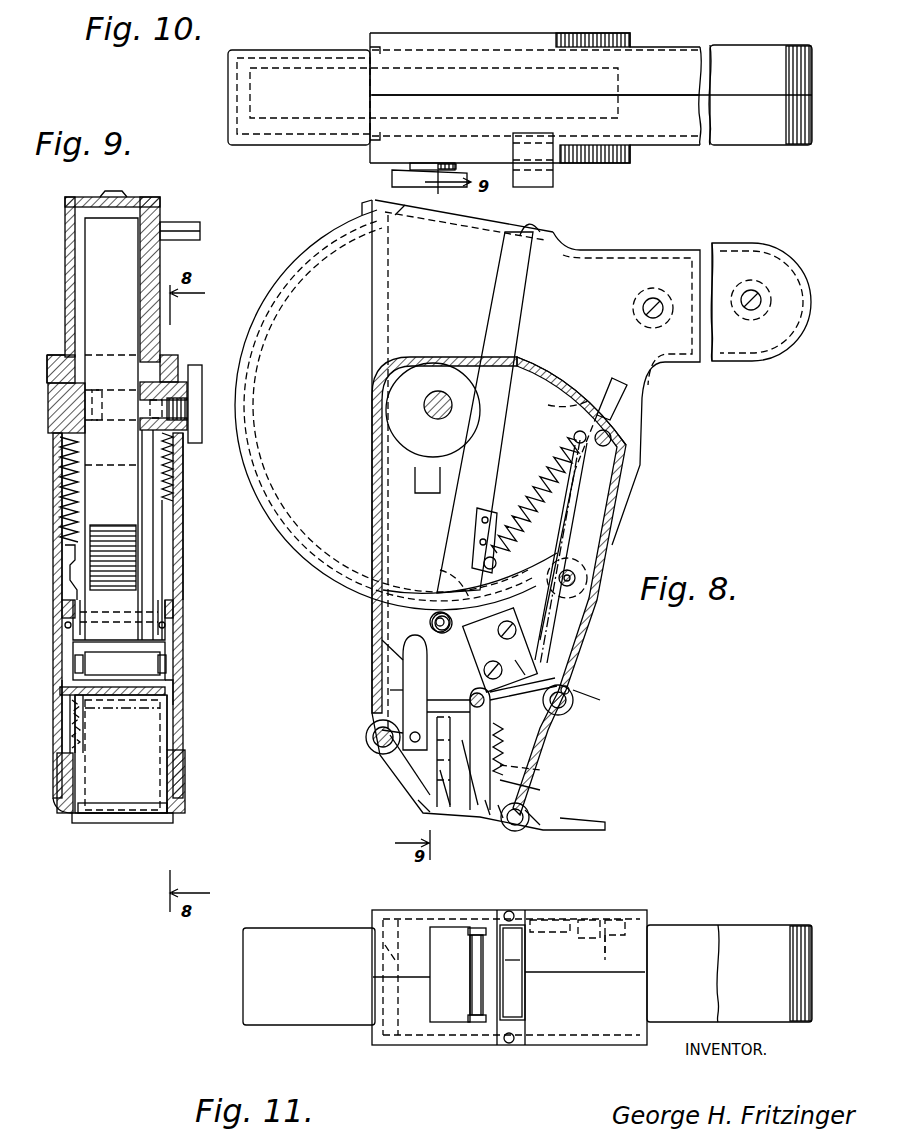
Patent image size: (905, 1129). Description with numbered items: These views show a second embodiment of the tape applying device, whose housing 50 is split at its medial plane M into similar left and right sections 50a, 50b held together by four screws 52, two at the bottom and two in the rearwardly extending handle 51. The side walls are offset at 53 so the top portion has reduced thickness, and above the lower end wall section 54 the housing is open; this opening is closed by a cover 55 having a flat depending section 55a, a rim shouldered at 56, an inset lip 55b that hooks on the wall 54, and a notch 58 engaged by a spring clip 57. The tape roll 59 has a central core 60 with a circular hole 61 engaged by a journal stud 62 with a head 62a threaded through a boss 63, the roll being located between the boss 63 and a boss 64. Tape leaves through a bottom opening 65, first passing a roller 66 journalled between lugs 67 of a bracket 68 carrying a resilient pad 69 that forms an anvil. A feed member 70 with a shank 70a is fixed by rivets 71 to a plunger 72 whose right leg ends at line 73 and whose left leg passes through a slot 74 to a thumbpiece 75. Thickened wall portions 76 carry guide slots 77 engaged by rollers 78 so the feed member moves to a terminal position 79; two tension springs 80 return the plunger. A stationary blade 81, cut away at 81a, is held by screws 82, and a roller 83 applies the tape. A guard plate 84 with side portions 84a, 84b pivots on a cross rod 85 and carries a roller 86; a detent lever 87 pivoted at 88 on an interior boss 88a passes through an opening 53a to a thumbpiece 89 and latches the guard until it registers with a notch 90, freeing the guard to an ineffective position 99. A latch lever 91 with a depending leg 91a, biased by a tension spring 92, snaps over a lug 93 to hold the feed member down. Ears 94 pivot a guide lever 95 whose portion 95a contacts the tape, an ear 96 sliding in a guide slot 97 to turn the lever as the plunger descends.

In FIG. 10, the housing 50 is at (637, 34).
In FIG. 9, the housing 50 is at (48, 440).
In FIG. 8, the housing 50 is at (645, 411).
In FIG. 10, the left housing section 50a is at (487, 113).
In FIG. 9, the left housing section 50a is at (183, 520).
In FIG. 10, the right housing section 50b is at (487, 78).
In FIG. 9, the right housing section 50b is at (56, 560).
In FIG. 10, the handle 51 is at (790, 130).
In FIG. 8, the handle 51 is at (740, 355).
In FIG. 11, the handle 51 is at (727, 925).
In FIG. 8, the screws 52 is at (751, 292).
In FIG. 11, the screws 52 is at (378, 958).
In FIG. 10, the offset 53 is at (375, 45).
In FIG. 9, the offset 53 is at (62, 354).
In FIG. 8, the offset 53 is at (545, 374).
In FIG. 8, the opening 53a is at (560, 403).
In FIG. 8, the lower end wall section 54 is at (430, 770).
In FIG. 10, the cover 55 is at (219, 81).
In FIG. 8, the cover 55 is at (303, 563).
In FIG. 11, the cover 55 is at (232, 1004).
In FIG. 8, the flat depending section 55a is at (400, 665).
In FIG. 8, the inset lip 55b is at (395, 730).
In FIG. 10, the shoulder 56 is at (368, 49).
In FIG. 8, the spring clip 57 is at (405, 215).
In FIG. 8, the notch 58 is at (362, 205).
In FIG. 10, the tape roll 59 is at (245, 100).
In FIG. 9, the tape roll 59 is at (140, 585).
In FIG. 8, the tape roll 59 is at (306, 272).
In FIG. 9, the central core 60 is at (90, 448).
In FIG. 8, the central core 60 is at (440, 475).
In FIG. 9, the circular hole 61 is at (48, 405).
In FIG. 8, the circular hole 61 is at (438, 444).
In FIG. 9, the journal stud 62 is at (160, 392).
In FIG. 8, the journal stud 62 is at (430, 395).
In FIG. 10, the head 62a is at (395, 178).
In FIG. 9, the head 62a is at (197, 444).
In FIG. 9, the boss 63 is at (162, 470).
In FIG. 9, the boss 64 is at (62, 385).
In FIG. 8, the bottom opening 65 is at (447, 806).
In FIG. 11, the bottom opening 65 is at (450, 1010).
In FIG. 9, the roller 66 is at (165, 602).
In FIG. 8, the roller 66 is at (558, 581).
In FIG. 9, the lugs 67 is at (85, 607).
In FIG. 8, the lugs 67 is at (512, 619).
In FIG. 8, the bracket 68 is at (570, 672).
In FIG. 8, the resilient pad 69 is at (572, 688).
In FIG. 9, the feed member 70 is at (119, 661).
In FIG. 8, the shank 70a is at (455, 590).
In FIG. 8, the rivets 71 is at (445, 634).
In FIG. 9, the plunger 72 is at (160, 595).
In FIG. 8, the plunger 72 is at (510, 480).
In FIG. 8, the line 73 is at (455, 565).
In FIG. 10, the slot 74 is at (560, 135).
In FIG. 9, the slot 74 is at (125, 195).
In FIG. 8, the slot 74 is at (540, 330).
In FIG. 10, the thumbpiece 75 is at (546, 178).
In FIG. 9, the thumbpiece 75 is at (185, 226).
In FIG. 8, the thumbpiece 75 is at (560, 233).
In FIG. 9, the portions of increased thickness 76 is at (60, 770).
In FIG. 8, the portions of increased thickness 76 is at (405, 655).
In FIG. 11, the portions of increased thickness 76 is at (418, 910).
In FIG. 9, the guide slots 77 is at (165, 676).
In FIG. 8, the guide slots 77 is at (390, 672).
In FIG. 9, the rollers 78 is at (62, 626).
In FIG. 8, the rollers 78 is at (435, 612).
In FIG. 8, the terminal position 79 is at (420, 800).
In FIG. 9, the tension springs 80 is at (60, 540).
In FIG. 8, the tension springs 80 is at (512, 522).
In FIG. 8, the stationary blade 81 is at (532, 826).
In FIG. 11, the stationary blade 81 is at (510, 1022).
In FIG. 11, the cut-away 81a is at (527, 972).
In FIG. 11, the screws 82 is at (512, 912).
In FIG. 9, the roller 83 is at (88, 826).
In FIG. 8, the roller 83 is at (530, 826).
In FIG. 11, the roller 83 is at (520, 1005).
In FIG. 9, the guard plate 84 is at (150, 785).
In FIG. 8, the guard plate 84 is at (472, 812).
In FIG. 11, the guard plate 84 is at (488, 1025).
In FIG. 8, the left side portion 84a is at (540, 790).
In FIG. 11, the left side portion 84a is at (480, 926).
In FIG. 8, the right side portion 84b is at (545, 770).
In FIG. 11, the right side portion 84b is at (477, 1018).
In FIG. 8, the cross rod 85 is at (585, 700).
In FIG. 9, the roller 86 is at (120, 826).
In FIG. 8, the roller 86 is at (490, 826).
In FIG. 8, the detent lever 87 is at (590, 540).
In FIG. 11, the detent lever 87 is at (614, 957).
In FIG. 8, the pivot 88 is at (577, 578).
In FIG. 11, the pivot 88 is at (590, 920).
In FIG. 11, the interior boss 88a is at (605, 920).
In FIG. 8, the thumbpiece 89 is at (618, 380).
In FIG. 11, the thumbpiece 89 is at (625, 925).
In FIG. 8, the notch 90 is at (540, 740).
In FIG. 9, the latch lever 91 is at (70, 742).
In FIG. 8, the depending leg 91a is at (520, 755).
In FIG. 9, the tension spring 92 is at (85, 762).
In FIG. 8, the tension spring 92 is at (505, 730).
In FIG. 8, the lug 93 is at (518, 650).
In FIG. 9, the ears 94 is at (72, 661).
In FIG. 8, the ears 94 is at (518, 670).
In FIG. 9, the guide lever 95 is at (173, 705).
In FIG. 8, the guide lever 95 is at (420, 690).
In FIG. 8, the rearwardly extending portion 95a is at (420, 706).
In FIG. 9, the ear 96 is at (62, 688).
In FIG. 9, the guide slot 97 is at (55, 810).
In FIG. 8, the guide slot 97 is at (418, 812).
In FIG. 8, the ineffective position 99 is at (503, 822).
In FIG. 10, the medial plane M is at (655, 95).